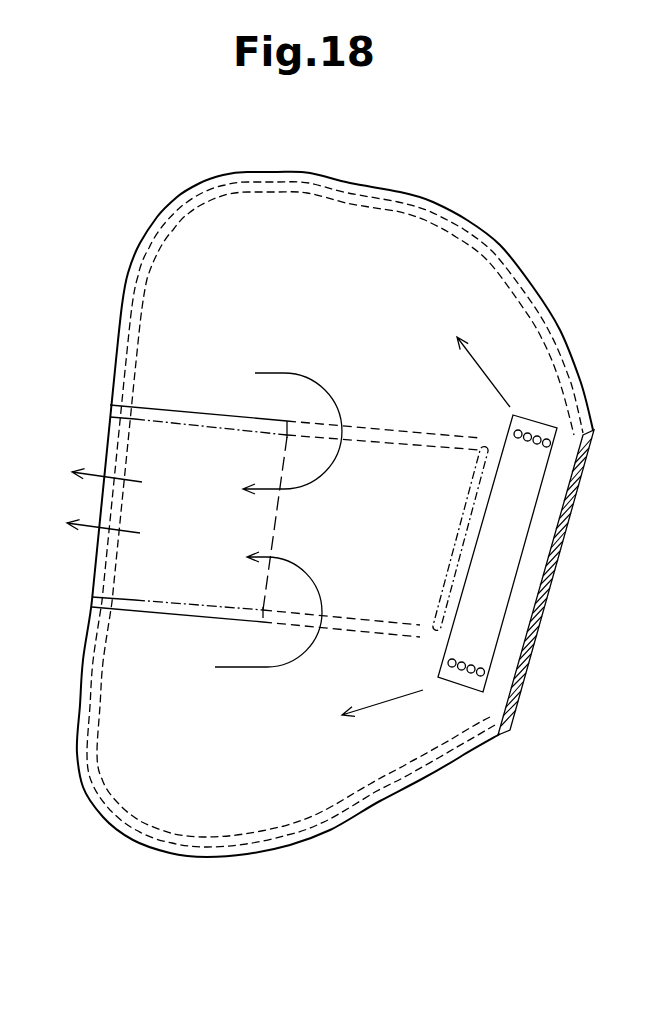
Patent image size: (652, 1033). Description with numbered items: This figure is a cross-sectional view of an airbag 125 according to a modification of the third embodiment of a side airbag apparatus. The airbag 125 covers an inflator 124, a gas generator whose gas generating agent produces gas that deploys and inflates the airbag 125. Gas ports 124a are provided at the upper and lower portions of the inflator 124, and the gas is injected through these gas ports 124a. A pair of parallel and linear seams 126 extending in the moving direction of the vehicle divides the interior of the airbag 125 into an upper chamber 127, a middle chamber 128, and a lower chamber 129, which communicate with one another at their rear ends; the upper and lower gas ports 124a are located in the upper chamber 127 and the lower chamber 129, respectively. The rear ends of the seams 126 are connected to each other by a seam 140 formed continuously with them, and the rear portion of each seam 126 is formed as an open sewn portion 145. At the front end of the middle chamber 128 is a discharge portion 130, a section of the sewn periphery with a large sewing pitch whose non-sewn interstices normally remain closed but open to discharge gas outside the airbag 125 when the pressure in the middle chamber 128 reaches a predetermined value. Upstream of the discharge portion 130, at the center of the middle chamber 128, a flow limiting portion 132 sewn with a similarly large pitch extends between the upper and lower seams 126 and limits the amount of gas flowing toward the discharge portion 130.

The airbag 125 is at (187, 192).
The upper chamber 127 is at (355, 217).
The lower chamber 129 is at (235, 812).
The seam 126 is at (180, 404).
The middle chamber 128 is at (135, 576).
The discharge portion 130 is at (115, 453).
The flow limiting portion 132 is at (277, 517).
The seam 140 is at (450, 547).
The open sewn portion 145 is at (420, 432).
The inflator 124 is at (510, 538).
The gas ports 124a is at (533, 448).